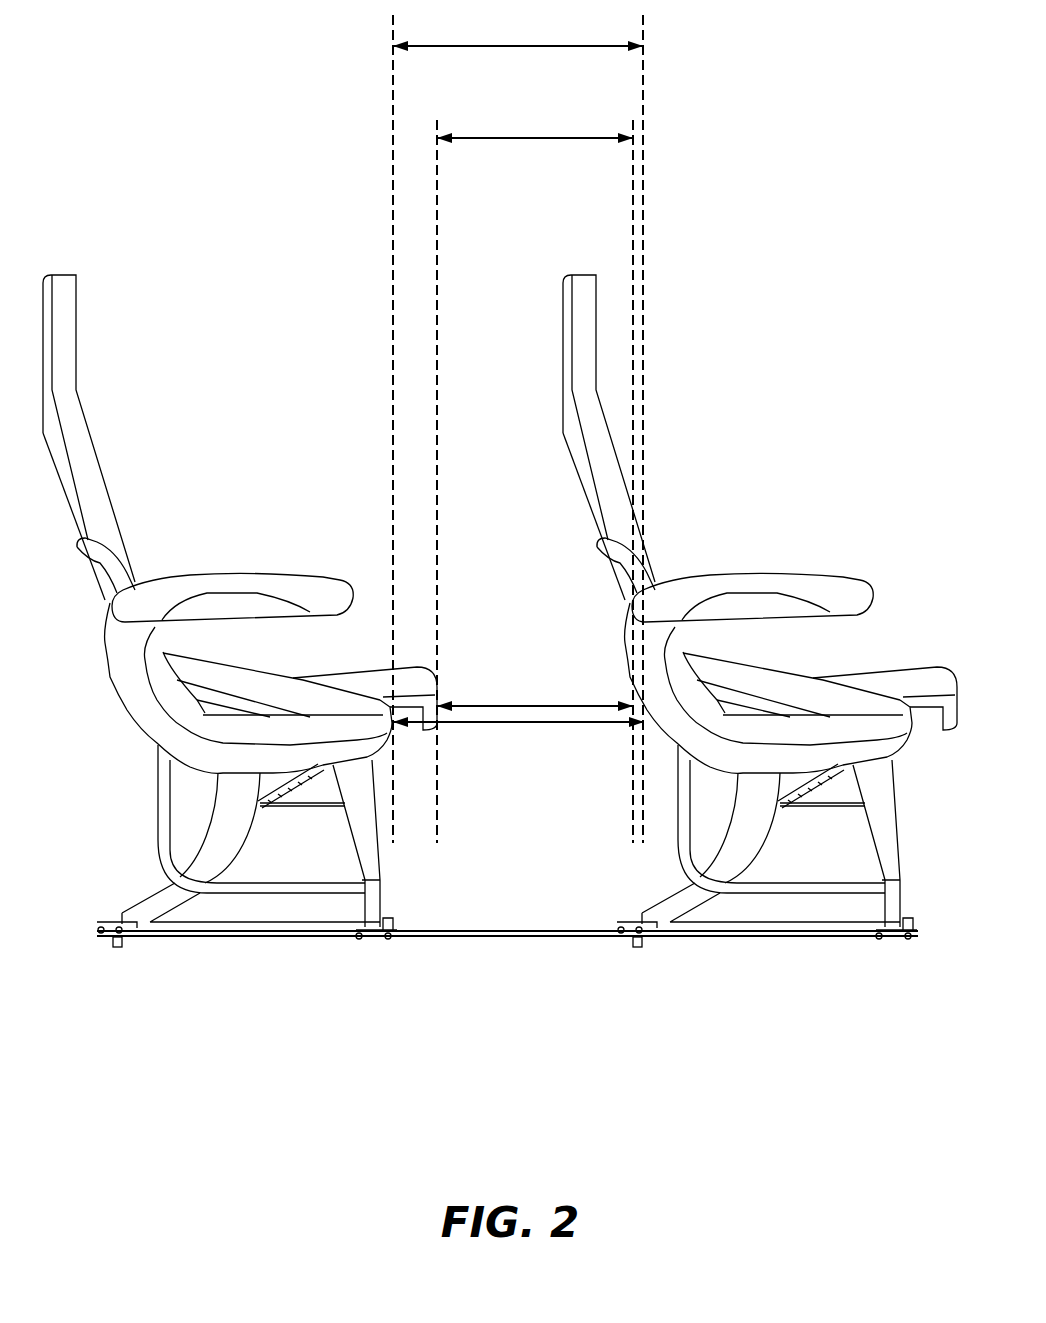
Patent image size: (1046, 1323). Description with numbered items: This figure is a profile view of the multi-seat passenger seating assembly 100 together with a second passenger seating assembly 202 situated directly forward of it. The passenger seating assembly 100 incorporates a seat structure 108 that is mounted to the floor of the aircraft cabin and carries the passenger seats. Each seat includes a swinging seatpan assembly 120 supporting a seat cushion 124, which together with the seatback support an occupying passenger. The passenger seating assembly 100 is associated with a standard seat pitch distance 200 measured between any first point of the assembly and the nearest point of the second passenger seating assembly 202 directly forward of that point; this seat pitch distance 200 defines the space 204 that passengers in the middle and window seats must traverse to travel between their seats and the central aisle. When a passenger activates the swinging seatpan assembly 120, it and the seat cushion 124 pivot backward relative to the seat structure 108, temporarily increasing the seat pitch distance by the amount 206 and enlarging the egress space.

The passenger seating assembly 100 is at (128, 311).
The second passenger seating assembly 202 is at (843, 385).
The seat structure 108 is at (232, 728).
The swinging seatpan assembly 120 is at (245, 692).
The seat cushion 124 is at (292, 698).
The seat pitch distance 200 is at (535, 471).
The space 204 is at (470, 540).
The temporary increase in seat pitch distance 206 is at (518, 423).